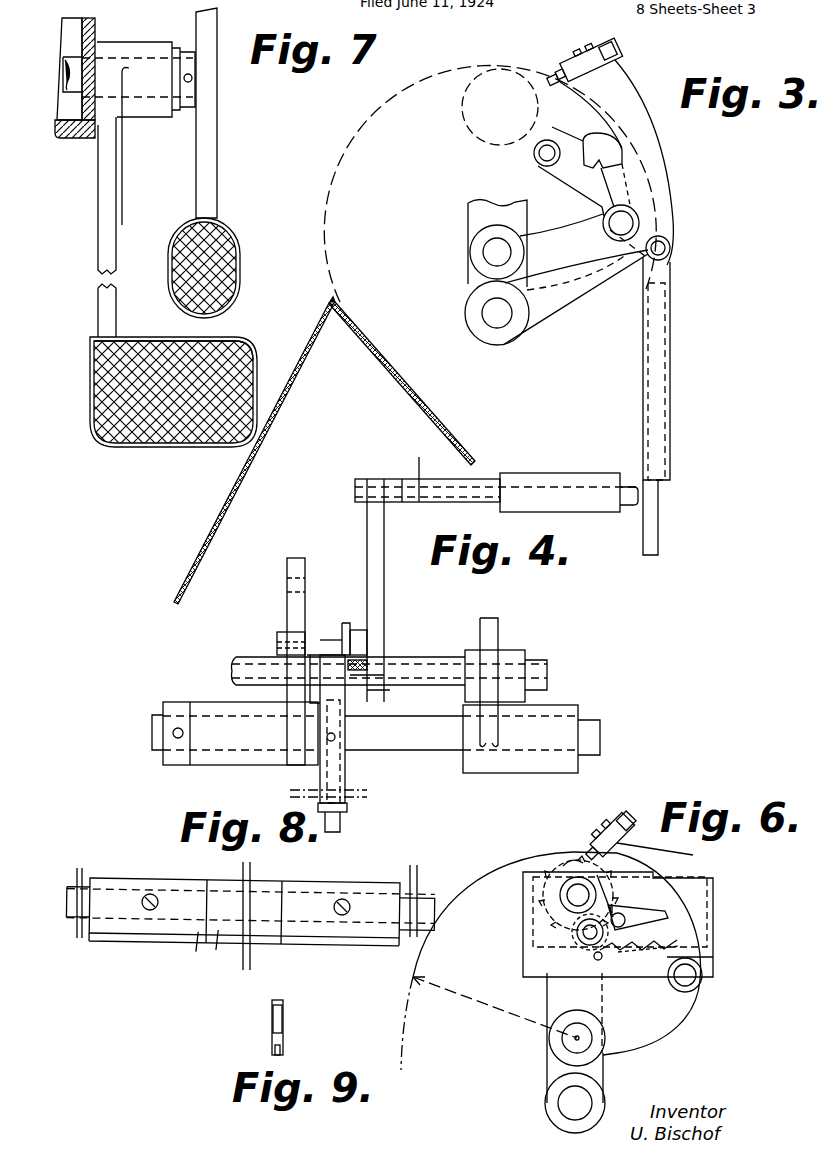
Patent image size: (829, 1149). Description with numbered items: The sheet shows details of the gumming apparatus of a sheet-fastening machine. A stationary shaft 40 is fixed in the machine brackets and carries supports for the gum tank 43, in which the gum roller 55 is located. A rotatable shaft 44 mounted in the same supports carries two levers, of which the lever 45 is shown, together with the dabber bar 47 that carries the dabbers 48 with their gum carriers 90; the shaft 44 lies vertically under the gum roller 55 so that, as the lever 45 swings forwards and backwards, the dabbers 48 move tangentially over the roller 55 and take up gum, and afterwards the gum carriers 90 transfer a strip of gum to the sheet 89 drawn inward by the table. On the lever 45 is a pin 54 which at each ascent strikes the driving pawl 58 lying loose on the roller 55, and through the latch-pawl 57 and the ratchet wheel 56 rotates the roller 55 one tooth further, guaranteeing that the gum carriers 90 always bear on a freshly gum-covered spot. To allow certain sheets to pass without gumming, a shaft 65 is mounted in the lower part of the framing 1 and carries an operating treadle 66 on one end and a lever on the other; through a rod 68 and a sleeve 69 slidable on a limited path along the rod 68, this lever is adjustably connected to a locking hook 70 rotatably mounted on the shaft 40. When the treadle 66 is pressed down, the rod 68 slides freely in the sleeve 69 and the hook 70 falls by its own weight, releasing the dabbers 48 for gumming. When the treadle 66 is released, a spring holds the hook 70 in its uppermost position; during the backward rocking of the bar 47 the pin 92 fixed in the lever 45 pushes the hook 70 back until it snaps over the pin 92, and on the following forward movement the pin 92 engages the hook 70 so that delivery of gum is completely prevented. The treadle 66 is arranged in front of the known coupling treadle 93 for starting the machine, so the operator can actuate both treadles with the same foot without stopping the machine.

In FIG. 7, the framing 1 is at (95, 31).
In FIG. 7, the shaft 65 is at (194, 55).
In FIG. 7, the operating treadle 66 is at (107, 190).
In FIG. 7, the coupling treadle 93 is at (226, 242).
In FIG. 3, the sheet 89 is at (414, 420).
In FIG. 3, the shaft 44 is at (497, 252).
In FIG. 4, the shaft 44 is at (540, 672).
In FIG. 6, the shaft 44 is at (565, 1044).
In FIG. 3, the stationary shaft 40 is at (497, 313).
In FIG. 4, the stationary shaft 40 is at (592, 740).
In FIG. 6, the stationary shaft 40 is at (563, 1097).
In FIG. 3, the sleeve 69 is at (643, 328).
In FIG. 4, the sleeve 69 is at (348, 782).
In FIG. 3, the rod 68 is at (660, 524).
In FIG. 4, the rod 68 is at (342, 822).
In FIG. 3, the pin 92 is at (618, 224).
In FIG. 4, the pin 92 is at (325, 640).
In FIG. 6, the pin 92 is at (688, 980).
In FIG. 3, the pin 54 is at (550, 150).
In FIG. 6, the pin 54 is at (578, 934).
In FIG. 3, the locking hook 70 is at (672, 210).
In FIG. 4, the locking hook 70 is at (287, 604).
In FIG. 3, the dabbers 48 is at (578, 68).
In FIG. 4, the dabbers 48 is at (565, 476).
In FIG. 8, the dabbers 48 is at (310, 935).
In FIG. 9, the dabbers 48 is at (283, 1034).
In FIG. 6, the dabbers 48 is at (616, 818).
In FIG. 3, the dabber bar 47 is at (620, 60).
In FIG. 4, the dabber bar 47 is at (407, 474).
In FIG. 8, the dabber bar 47 is at (70, 912).
In FIG. 9, the dabber bar 47 is at (272, 1014).
In FIG. 6, the dabber bar 47 is at (666, 838).
In FIG. 3, the gum carriers 90 is at (558, 71).
In FIG. 8, the gum carriers 90 is at (162, 943).
In FIG. 9, the gum carriers 90 is at (281, 1053).
In FIG. 6, the gum carriers 90 is at (580, 860).
In FIG. 4, the lever 45 is at (376, 522).
In FIG. 6, the lever 45 is at (665, 1028).
In FIG. 6, the gum tank 43 is at (715, 876).
In FIG. 6, the ratchet wheel 56 is at (556, 896).
In FIG. 6, the latch-pawl 57 is at (632, 908).
In FIG. 6, the driving pawl 58 is at (700, 941).
In FIG. 6, the roller 55 is at (566, 866).